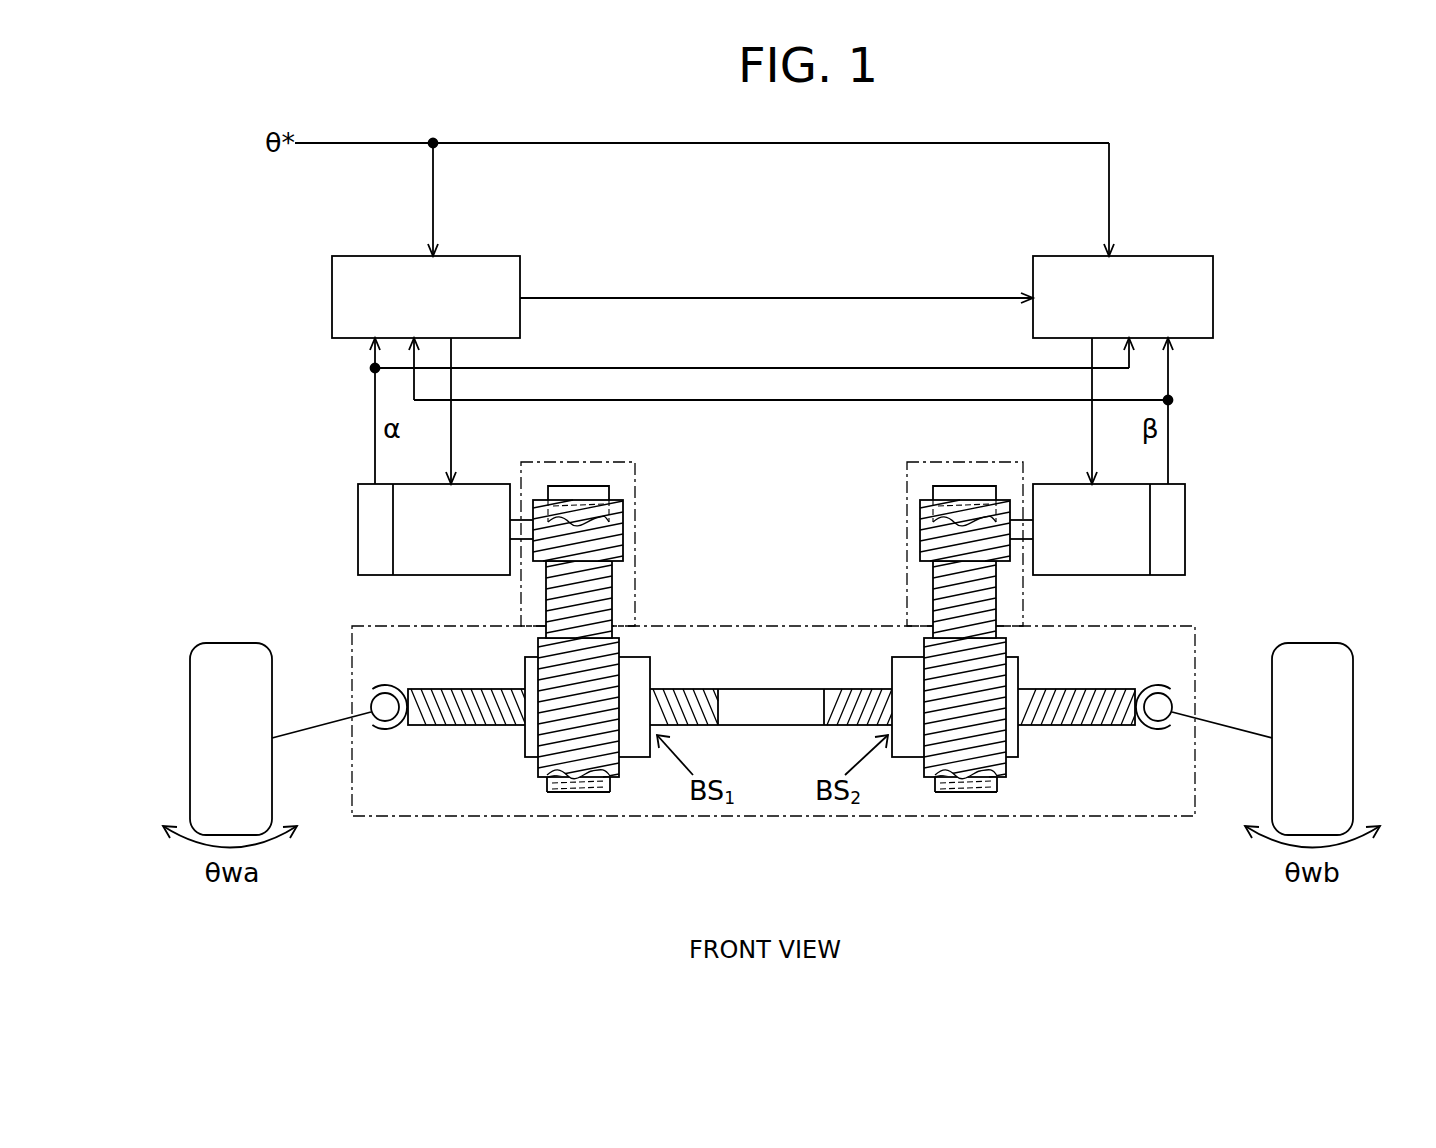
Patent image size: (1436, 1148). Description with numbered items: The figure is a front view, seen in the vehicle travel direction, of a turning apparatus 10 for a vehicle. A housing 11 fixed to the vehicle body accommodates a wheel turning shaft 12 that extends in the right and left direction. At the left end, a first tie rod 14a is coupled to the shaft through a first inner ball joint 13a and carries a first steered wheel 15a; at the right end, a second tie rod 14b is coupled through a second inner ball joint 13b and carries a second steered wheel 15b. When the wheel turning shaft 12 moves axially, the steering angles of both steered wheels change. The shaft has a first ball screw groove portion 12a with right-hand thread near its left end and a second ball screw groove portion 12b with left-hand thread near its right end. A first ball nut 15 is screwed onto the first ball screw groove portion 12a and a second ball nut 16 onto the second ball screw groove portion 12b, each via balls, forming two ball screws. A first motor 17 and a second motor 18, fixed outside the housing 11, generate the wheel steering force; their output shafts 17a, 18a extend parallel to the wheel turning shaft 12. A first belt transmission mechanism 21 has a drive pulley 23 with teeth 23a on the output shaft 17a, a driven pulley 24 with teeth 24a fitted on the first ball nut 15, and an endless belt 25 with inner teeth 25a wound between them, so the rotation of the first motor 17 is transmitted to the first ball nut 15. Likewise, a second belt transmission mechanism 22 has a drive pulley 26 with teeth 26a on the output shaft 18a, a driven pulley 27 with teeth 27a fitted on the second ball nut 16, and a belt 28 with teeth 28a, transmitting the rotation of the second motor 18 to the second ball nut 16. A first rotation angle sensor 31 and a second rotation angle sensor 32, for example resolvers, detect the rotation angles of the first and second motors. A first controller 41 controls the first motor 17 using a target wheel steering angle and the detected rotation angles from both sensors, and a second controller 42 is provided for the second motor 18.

The turning apparatus 10 is at (1333, 192).
The housing 11 is at (770, 816).
The wheel turning shaft 12 is at (772, 727).
The first ball screw groove portion 12a is at (470, 727).
The second ball screw groove portion 12b is at (1066, 727).
The first inner ball joint 13a is at (386, 684).
The second inner ball joint 13b is at (1158, 684).
The first tie rod 14a is at (312, 732).
The second tie rod 14b is at (1232, 732).
The first ball nut 15 is at (634, 750).
The first steered wheel 15a is at (232, 643).
The second steered wheel 15b is at (1308, 643).
The second ball nut 16 is at (908, 750).
The first motor 17 is at (484, 577).
The output shaft 17a is at (522, 516).
The second motor 18 is at (1060, 577).
The output shaft 18a is at (1024, 516).
The first belt transmission mechanism 21 is at (593, 622).
The second belt transmission mechanism 22 is at (951, 622).
The drive pulley 23 is at (623, 510).
The teeth 23a is at (623, 545).
The driven pulley 24 is at (620, 652).
The teeth 24a is at (550, 660).
The belt 25 is at (612, 583).
The teeth 25a is at (612, 612).
The drive pulley 26 is at (920, 510).
The teeth 26a is at (935, 545).
The driven pulley 27 is at (924, 652).
The teeth 27a is at (992, 660).
The belt 28 is at (933, 583).
The teeth 28a is at (933, 612).
The first rotation angle sensor 31 is at (358, 536).
The second rotation angle sensor 32 is at (1185, 535).
The first controller 41 is at (480, 256).
The second controller 42 is at (1072, 256).